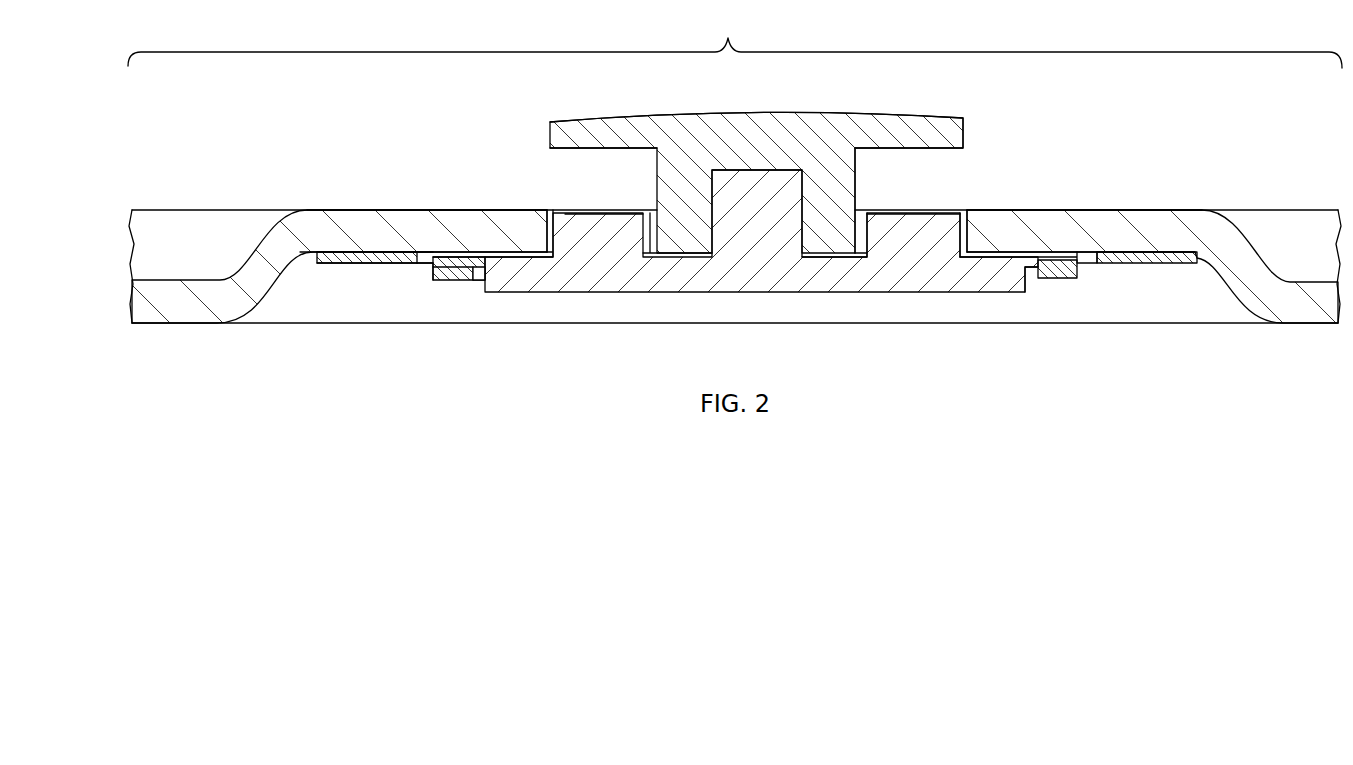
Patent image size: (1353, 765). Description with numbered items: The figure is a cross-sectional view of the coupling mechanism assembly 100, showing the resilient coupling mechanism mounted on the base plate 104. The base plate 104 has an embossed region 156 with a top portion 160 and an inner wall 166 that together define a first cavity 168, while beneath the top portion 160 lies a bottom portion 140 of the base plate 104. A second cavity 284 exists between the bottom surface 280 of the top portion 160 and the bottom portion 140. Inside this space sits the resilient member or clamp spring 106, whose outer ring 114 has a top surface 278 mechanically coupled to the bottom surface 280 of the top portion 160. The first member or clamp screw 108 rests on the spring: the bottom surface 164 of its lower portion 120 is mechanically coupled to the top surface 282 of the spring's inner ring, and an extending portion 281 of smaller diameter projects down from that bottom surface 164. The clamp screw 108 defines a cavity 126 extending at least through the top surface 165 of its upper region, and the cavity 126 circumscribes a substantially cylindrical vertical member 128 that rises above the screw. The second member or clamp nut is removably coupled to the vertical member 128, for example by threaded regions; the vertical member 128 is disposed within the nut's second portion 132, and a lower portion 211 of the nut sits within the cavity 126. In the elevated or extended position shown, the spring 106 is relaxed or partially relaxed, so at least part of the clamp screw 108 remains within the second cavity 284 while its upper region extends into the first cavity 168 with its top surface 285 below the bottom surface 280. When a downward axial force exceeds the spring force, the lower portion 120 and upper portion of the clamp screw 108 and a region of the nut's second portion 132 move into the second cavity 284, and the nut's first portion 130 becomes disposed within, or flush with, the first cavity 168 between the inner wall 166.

The sensor package 100 is at (735, 38).
The base plate 104 is at (157, 323).
The resilient member 106 is at (1213, 258).
The first member 108 is at (942, 230).
The outer portion 114 is at (328, 264).
The first portion 120 is at (1018, 256).
The cavity 126 is at (650, 210).
The vertical member 128 is at (750, 178).
The first portion 130 is at (963, 132).
The second portion 132 is at (857, 162).
The bottom portion 140 is at (210, 327).
The embossed region 156 is at (402, 210).
The top portion 160 is at (359, 206).
The bottom surface 164 is at (1032, 282).
The top surface 165 is at (934, 205).
The inner wall 166 is at (556, 236).
The first cavity 168 is at (560, 216).
The portion 211 is at (857, 214).
The top surface 278 is at (348, 241).
The bottom surface 280 is at (355, 266).
The extending portion 281 is at (483, 287).
The top surface 282 is at (1068, 258).
The second cavity 284 is at (425, 302).
The top surface 285 is at (483, 248).